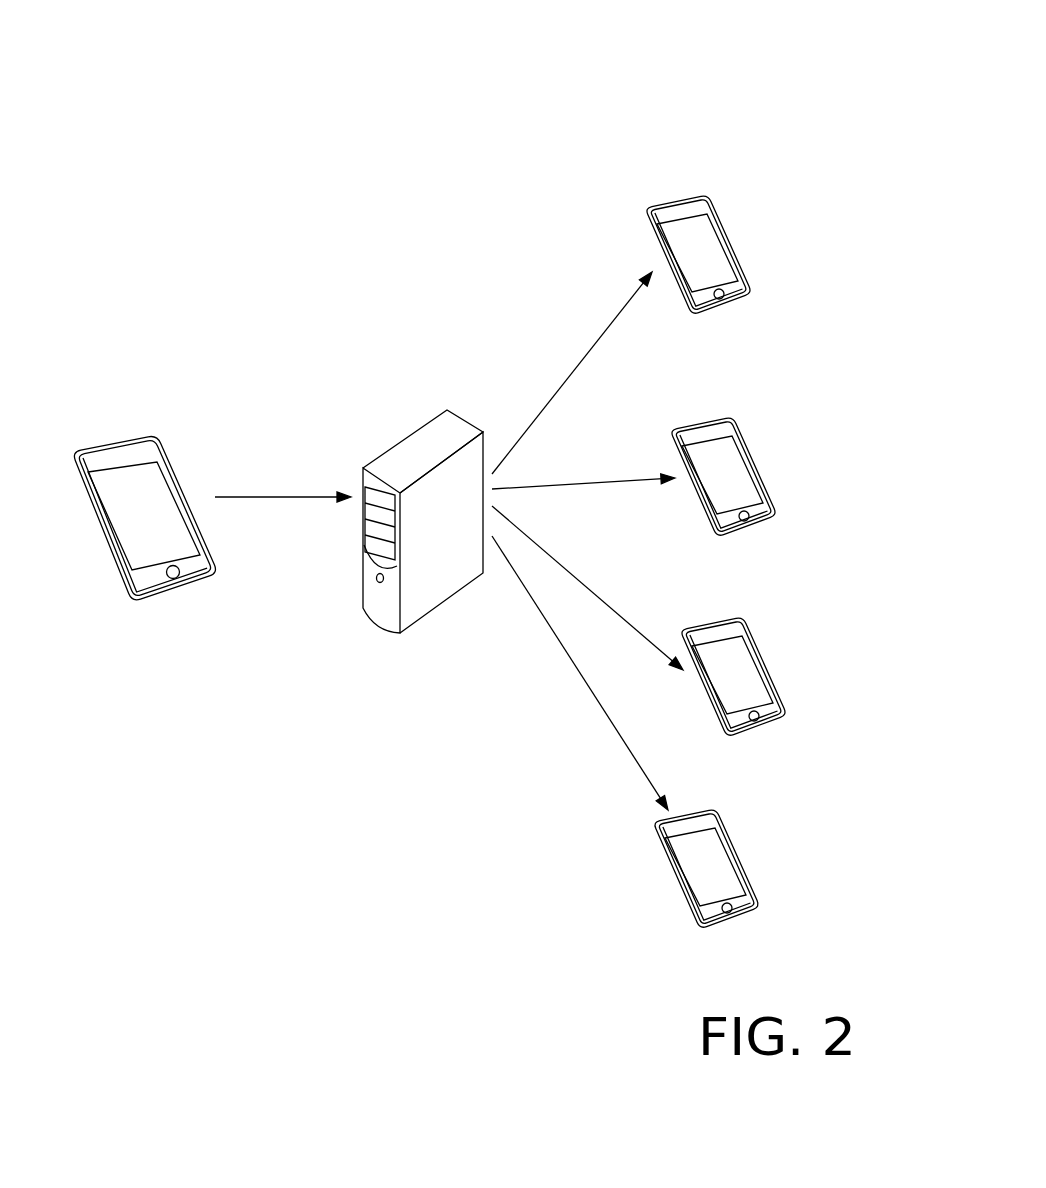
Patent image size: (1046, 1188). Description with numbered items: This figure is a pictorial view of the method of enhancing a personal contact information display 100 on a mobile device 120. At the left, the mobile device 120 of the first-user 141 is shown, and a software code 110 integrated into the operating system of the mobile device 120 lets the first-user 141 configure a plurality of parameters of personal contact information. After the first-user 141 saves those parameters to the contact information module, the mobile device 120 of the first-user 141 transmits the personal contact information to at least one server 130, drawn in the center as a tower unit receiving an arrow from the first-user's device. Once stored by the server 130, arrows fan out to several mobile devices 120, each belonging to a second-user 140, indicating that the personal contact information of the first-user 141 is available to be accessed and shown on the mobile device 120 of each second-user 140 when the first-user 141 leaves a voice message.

The personal contact information display 100 is at (585, 95).
The software code 110 is at (623, 125).
The mobile device 120 is at (158, 497).
The server 130 is at (431, 440).
The second-user 140 is at (685, 192).
The first-user 141 is at (127, 422).